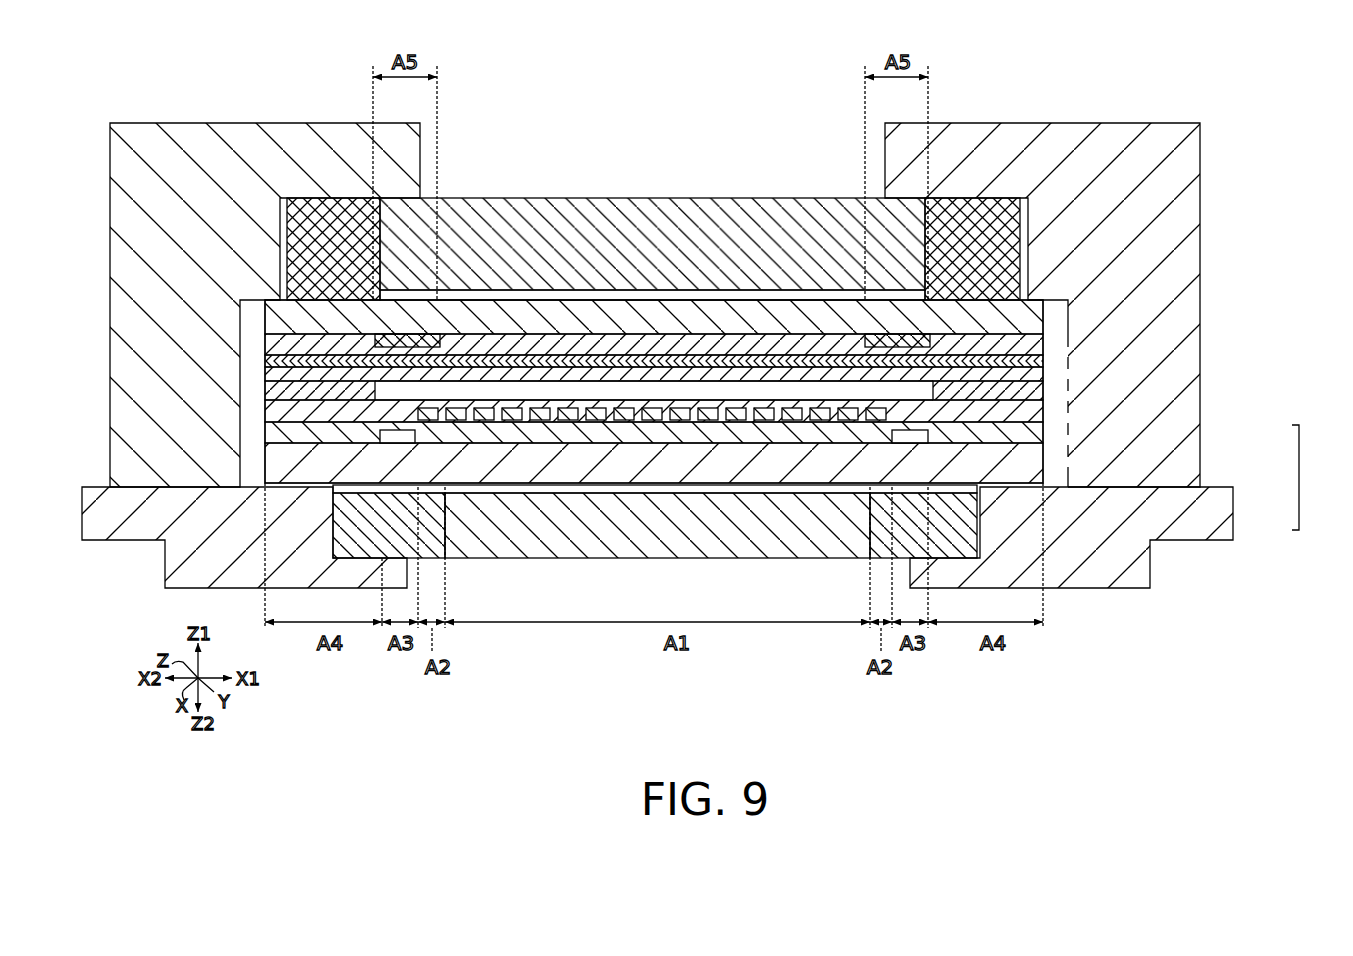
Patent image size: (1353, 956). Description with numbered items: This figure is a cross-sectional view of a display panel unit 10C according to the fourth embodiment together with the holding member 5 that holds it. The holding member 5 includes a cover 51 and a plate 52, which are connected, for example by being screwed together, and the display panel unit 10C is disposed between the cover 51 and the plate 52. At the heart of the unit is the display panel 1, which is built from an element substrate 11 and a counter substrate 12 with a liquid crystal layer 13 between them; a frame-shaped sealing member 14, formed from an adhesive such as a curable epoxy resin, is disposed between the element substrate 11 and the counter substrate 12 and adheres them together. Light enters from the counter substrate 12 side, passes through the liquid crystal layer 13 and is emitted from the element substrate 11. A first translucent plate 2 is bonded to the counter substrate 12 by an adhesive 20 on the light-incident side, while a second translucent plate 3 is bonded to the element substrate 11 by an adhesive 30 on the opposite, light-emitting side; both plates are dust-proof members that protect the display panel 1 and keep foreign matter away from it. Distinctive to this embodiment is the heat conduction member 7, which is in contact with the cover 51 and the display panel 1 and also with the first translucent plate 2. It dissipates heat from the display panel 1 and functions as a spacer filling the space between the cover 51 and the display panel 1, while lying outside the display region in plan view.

The display panel 1 is at (571, 291).
The first translucent plate 2 is at (645, 240).
The second translucent plate 3 is at (706, 545).
The holding member 5 is at (1309, 477).
The heat conduction member 7 is at (322, 250).
The display panel unit 10C is at (787, 190).
The element substrate 11 is at (1046, 400).
The counter substrate 12 is at (1046, 302).
The liquid crystal layer 13 is at (715, 392).
The sealing member 14 is at (1043, 392).
The adhesive 20 is at (493, 294).
The adhesive 30 is at (598, 493).
The cover 51 is at (1185, 420).
The plate 52 is at (1184, 516).